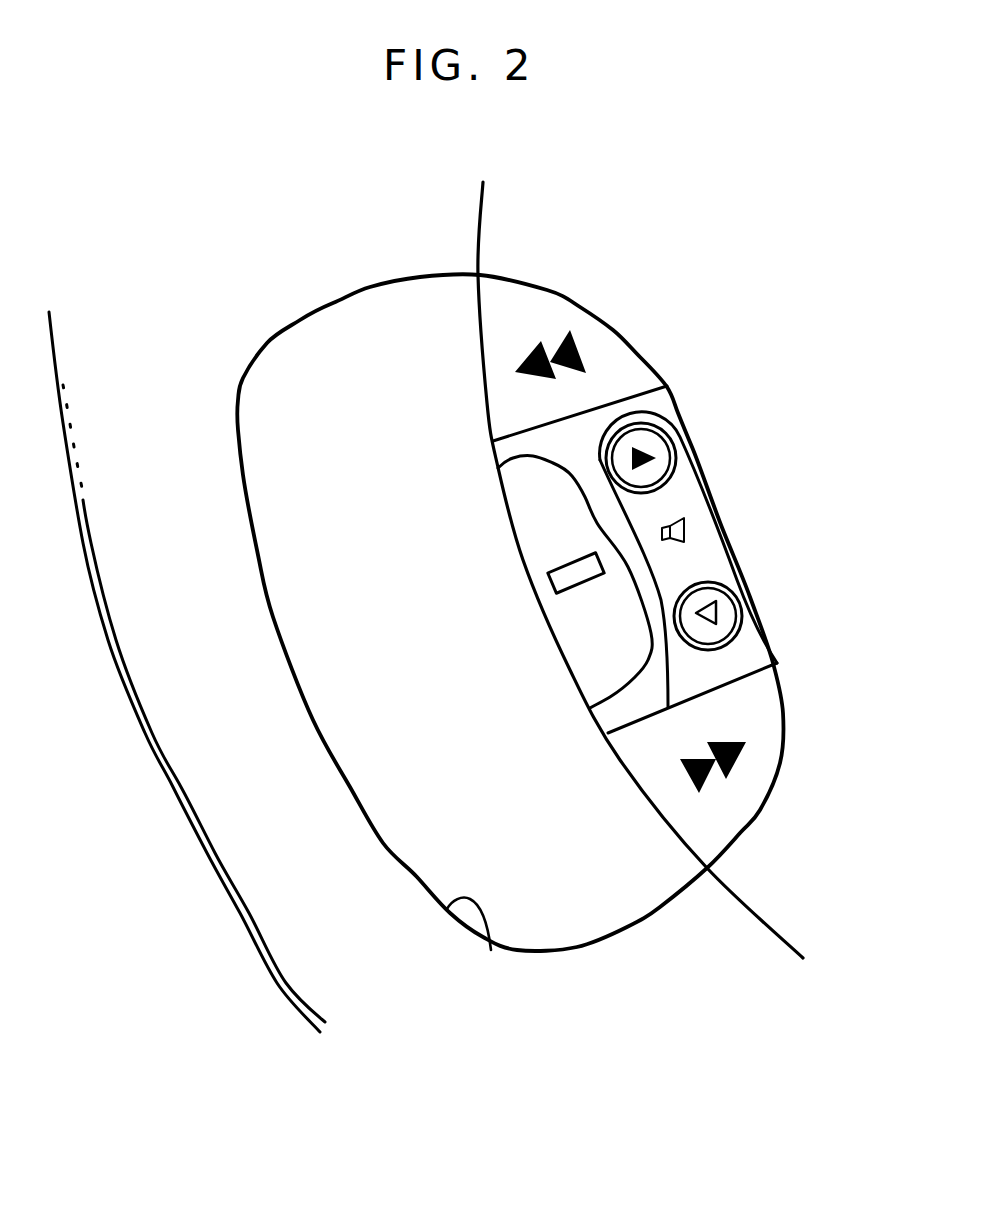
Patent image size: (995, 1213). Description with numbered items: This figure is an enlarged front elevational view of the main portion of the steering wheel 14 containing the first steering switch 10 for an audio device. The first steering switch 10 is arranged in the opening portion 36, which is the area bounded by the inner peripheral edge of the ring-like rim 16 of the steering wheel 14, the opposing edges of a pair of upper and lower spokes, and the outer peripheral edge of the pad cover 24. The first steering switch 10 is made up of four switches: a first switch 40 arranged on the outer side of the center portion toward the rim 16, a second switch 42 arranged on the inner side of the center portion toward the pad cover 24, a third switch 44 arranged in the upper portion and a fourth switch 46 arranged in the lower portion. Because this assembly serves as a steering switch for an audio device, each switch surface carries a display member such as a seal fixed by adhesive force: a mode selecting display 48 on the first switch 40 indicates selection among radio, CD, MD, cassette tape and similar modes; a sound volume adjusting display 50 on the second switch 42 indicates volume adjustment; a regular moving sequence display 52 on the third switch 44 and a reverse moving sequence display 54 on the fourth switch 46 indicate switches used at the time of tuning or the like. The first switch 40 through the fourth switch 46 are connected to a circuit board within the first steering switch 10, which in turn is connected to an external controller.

The first steering switch 10 is at (484, 400).
The steering wheel 14 is at (273, 973).
The rim 16 is at (260, 902).
The pad cover 24 is at (782, 908).
The opening portion 36 is at (491, 950).
The first switch 40 is at (597, 678).
The second switch 42 is at (617, 757).
The third switch 44 is at (537, 312).
The fourth switch 46 is at (715, 815).
The mode selecting display 48 is at (590, 588).
The sound volume adjusting display 50 is at (710, 613).
The regular moving sequence display 52 is at (580, 340).
The reverse moving sequence display 54 is at (742, 763).